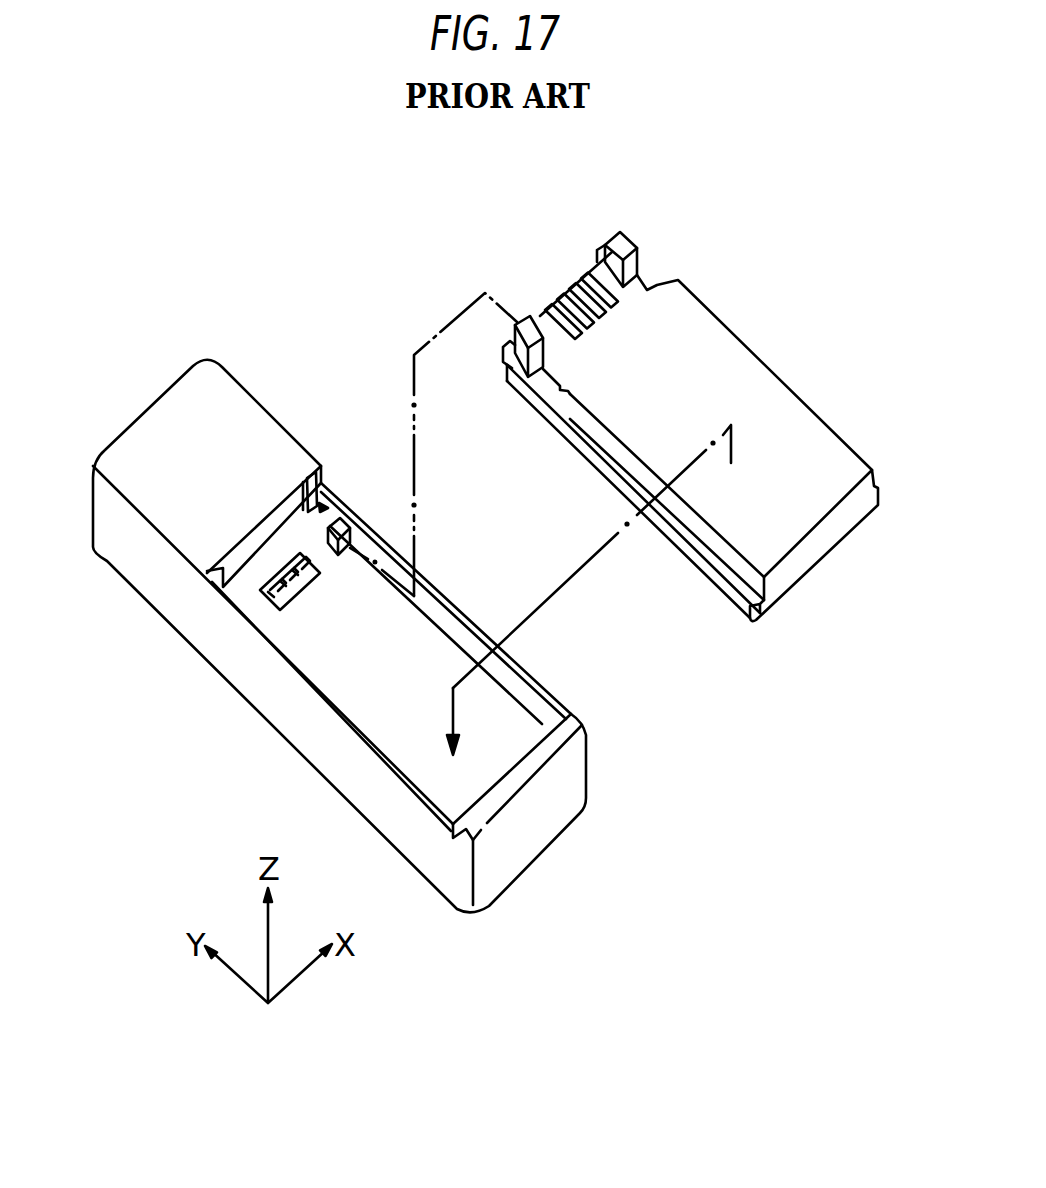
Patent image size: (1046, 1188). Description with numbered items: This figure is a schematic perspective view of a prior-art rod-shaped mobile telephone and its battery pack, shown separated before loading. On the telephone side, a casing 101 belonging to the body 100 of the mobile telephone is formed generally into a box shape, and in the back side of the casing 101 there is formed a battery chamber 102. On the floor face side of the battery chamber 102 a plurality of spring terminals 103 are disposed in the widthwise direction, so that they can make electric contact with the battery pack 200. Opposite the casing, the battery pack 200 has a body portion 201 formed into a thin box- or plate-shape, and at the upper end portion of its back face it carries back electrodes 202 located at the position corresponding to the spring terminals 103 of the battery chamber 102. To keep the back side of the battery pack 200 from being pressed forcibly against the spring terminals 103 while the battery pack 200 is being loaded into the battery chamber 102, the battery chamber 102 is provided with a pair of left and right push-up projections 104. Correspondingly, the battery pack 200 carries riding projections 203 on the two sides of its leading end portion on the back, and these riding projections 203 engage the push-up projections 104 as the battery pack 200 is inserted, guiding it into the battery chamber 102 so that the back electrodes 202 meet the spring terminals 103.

The body 100 is at (386, 589).
The casing 101 is at (450, 870).
The battery chamber 102 is at (410, 764).
The spring terminals 103 is at (327, 580).
The push-up projections 104 is at (320, 458).
The battery pack 200 is at (656, 399).
The body portion 201 is at (808, 455).
The back electrodes 202 is at (560, 263).
The riding projections 203 is at (515, 338).